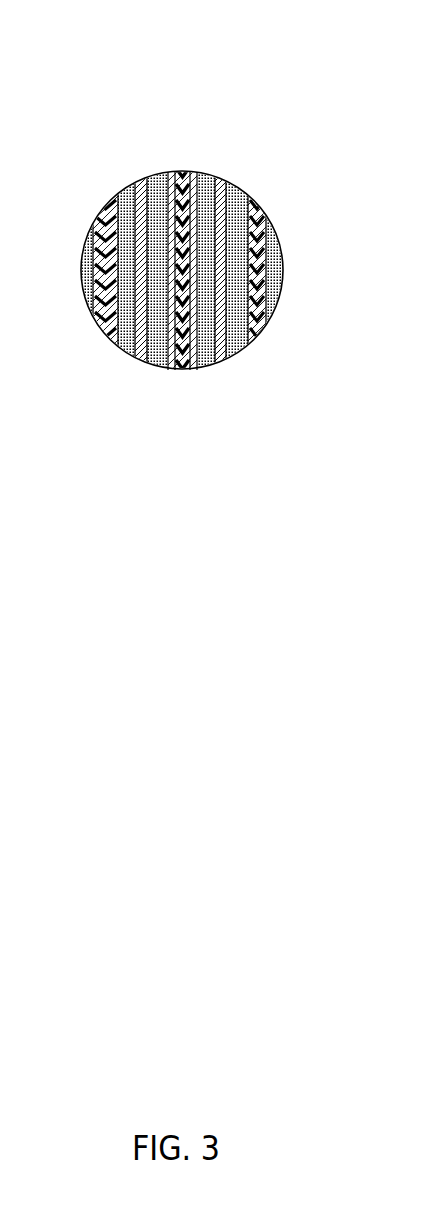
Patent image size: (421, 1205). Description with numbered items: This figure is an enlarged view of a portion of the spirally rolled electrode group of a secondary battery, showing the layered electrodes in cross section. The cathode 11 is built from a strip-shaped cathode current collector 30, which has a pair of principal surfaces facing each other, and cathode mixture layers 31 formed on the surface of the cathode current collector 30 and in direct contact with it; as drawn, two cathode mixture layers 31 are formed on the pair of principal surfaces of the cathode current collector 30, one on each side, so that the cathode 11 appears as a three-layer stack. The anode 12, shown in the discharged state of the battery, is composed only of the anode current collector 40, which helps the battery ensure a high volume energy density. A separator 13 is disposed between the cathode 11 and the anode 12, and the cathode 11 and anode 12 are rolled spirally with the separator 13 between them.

The cathode 11 is at (127, 212).
The anode 12 is at (197, 225).
The anode current collector 40 is at (197, 225).
The separator 13 is at (168, 370).
The cathode current collector 30 is at (129, 240).
The cathode mixture layer 31 is at (126, 184).